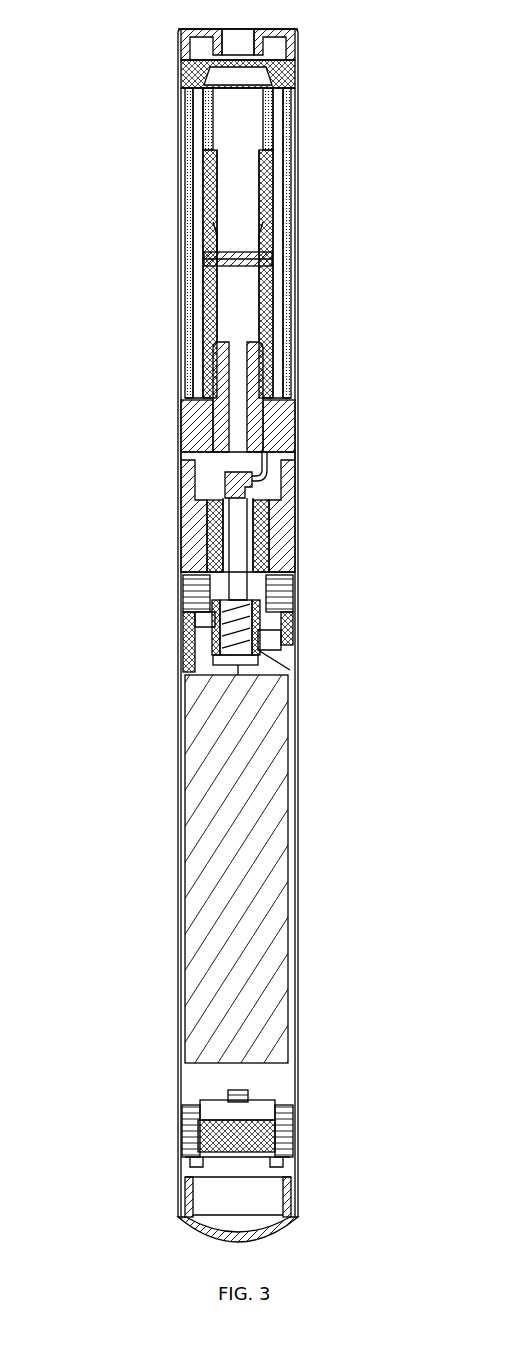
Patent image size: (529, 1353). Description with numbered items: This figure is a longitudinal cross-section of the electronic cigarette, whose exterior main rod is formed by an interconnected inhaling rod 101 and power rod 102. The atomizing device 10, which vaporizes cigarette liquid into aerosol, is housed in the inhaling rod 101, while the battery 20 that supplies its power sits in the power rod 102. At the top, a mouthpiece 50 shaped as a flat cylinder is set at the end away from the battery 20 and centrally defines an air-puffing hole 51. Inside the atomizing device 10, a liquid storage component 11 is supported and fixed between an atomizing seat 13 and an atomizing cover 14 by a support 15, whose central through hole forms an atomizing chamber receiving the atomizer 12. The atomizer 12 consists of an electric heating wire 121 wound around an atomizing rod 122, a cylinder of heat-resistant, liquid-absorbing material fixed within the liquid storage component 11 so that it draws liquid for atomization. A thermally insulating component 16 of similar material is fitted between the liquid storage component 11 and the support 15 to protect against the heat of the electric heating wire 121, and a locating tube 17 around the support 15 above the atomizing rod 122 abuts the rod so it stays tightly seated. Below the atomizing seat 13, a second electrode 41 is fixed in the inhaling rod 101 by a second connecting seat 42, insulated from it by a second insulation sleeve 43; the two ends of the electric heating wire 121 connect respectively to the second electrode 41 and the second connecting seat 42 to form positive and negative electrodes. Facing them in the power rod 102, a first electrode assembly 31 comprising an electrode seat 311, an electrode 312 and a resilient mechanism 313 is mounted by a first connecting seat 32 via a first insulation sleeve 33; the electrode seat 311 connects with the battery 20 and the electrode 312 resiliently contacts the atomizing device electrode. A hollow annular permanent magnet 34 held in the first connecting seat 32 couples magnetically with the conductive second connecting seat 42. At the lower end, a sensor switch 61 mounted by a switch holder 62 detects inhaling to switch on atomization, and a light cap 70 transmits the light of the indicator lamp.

The atomizing device 10 is at (412, 90).
The inhaling rod 101 is at (177, 372).
The power rod 102 is at (178, 863).
The liquid storage component 11 is at (280, 170).
The atomizer 12 is at (310, 261).
The electric heating wire 121 is at (266, 250).
The atomizing rod 122 is at (266, 268).
The atomizing seat 13 is at (298, 435).
The atomizing cover 14 is at (298, 76).
The support 15 is at (193, 285).
The thermally insulating component 16 is at (203, 207).
The locating tube 17 is at (208, 150).
The battery 20 is at (282, 850).
The first electrode assembly 31 is at (319, 640).
The electrode seat 311 is at (258, 658).
The electrode 312 is at (258, 604).
The resilient mechanism 313 is at (255, 633).
The first connecting seat 32 is at (298, 570).
The first insulation sleeve 33 is at (183, 625).
The permanent magnet 34 is at (183, 590).
The second electrode 41 is at (297, 505).
The second connecting seat 42 is at (298, 553).
The second insulation sleeve 43 is at (205, 545).
The mouthpiece 50 is at (298, 39).
The suction hole 51 is at (235, 42).
The sensor switch 61 is at (295, 1147).
The switch holder 62 is at (293, 1120).
The light cap 70 is at (295, 1227).